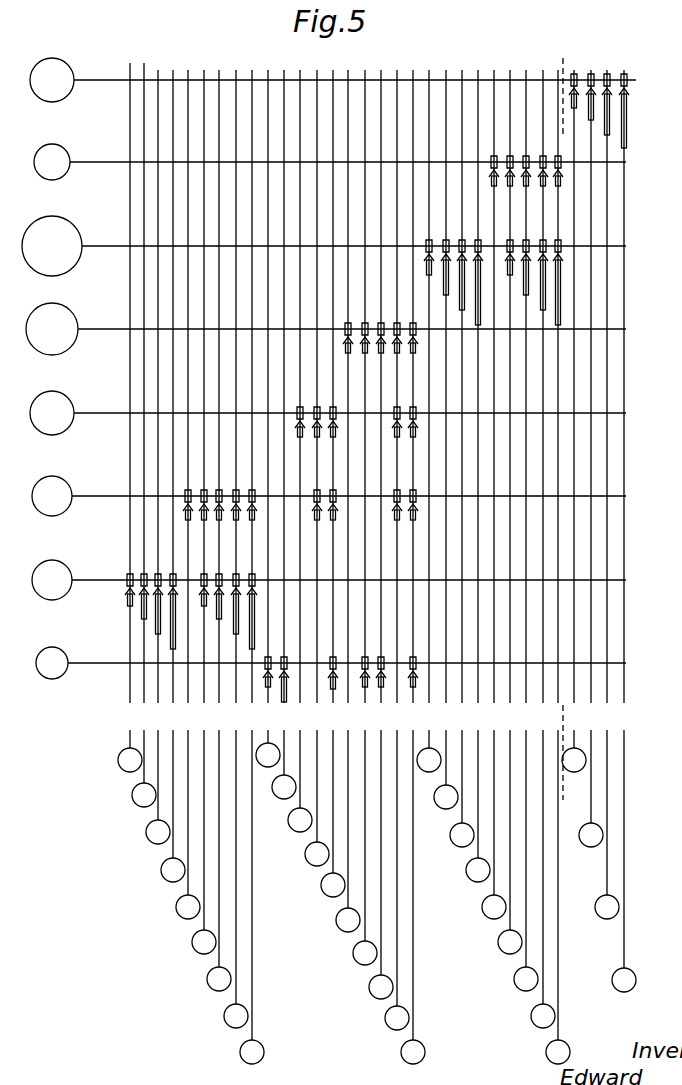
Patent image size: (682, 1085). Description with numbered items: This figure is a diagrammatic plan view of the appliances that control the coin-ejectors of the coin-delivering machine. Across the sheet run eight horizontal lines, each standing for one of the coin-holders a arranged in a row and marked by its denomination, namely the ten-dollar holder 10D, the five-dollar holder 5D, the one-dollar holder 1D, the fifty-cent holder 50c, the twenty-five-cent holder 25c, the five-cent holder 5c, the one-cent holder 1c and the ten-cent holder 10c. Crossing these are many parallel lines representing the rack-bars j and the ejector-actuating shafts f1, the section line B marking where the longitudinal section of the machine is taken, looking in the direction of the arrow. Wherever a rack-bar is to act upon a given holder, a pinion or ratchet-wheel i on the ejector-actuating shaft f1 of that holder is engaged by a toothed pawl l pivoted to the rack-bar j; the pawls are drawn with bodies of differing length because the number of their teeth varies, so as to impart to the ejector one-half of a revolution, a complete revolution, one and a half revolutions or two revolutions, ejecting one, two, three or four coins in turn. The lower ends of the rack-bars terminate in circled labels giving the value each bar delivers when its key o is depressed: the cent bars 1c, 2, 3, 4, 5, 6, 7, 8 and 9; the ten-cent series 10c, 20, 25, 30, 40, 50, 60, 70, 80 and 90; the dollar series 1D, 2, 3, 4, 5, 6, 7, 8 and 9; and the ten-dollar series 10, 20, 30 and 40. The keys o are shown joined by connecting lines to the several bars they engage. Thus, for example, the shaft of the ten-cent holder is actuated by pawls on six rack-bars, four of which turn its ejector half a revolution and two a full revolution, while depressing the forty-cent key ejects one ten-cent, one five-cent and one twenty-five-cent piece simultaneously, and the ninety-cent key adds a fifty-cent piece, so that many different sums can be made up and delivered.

The coin-holder a is at (66, 100).
The ejector-actuating shaft f1 is at (469, 80).
The pinion or ratchet-wheel i is at (622, 73).
The toothed or rack pawl l is at (557, 187).
The rack-bar j is at (270, 298).
The section line B B is at (540, 63).
The key o is at (163, 872).
The ten dollar line 10D is at (52, 80).
The five dollar line 5D is at (52, 162).
The one dollar line 1D is at (231, 494).
The fifty cent line 50c is at (52, 329).
The twenty-five cent line 25c is at (52, 413).
The five cent line 5c is at (52, 496).
The one cent line 1c is at (87, 666).
The ten cent line 10c is at (158, 707).
The terminal 2 is at (295, 796).
The terminal 3 is at (310, 833).
The terminal 4 is at (325, 870).
The terminal 5 is at (341, 907).
The finger-piece 6 is at (357, 942).
The terminal 7 is at (372, 979).
The terminal 8 is at (389, 1016).
The terminal 9 is at (405, 1052).
The terminal 10 is at (574, 760).
The terminal 20 is at (437, 811).
The terminal 25 is at (300, 820).
The terminal 30 is at (462, 880).
The terminal 40 is at (478, 932).
The terminal 50 is at (348, 920).
The terminal 60 is at (365, 953).
The terminal 70 is at (381, 987).
The terminal 80 is at (397, 1018).
The terminal 90 is at (413, 1052).